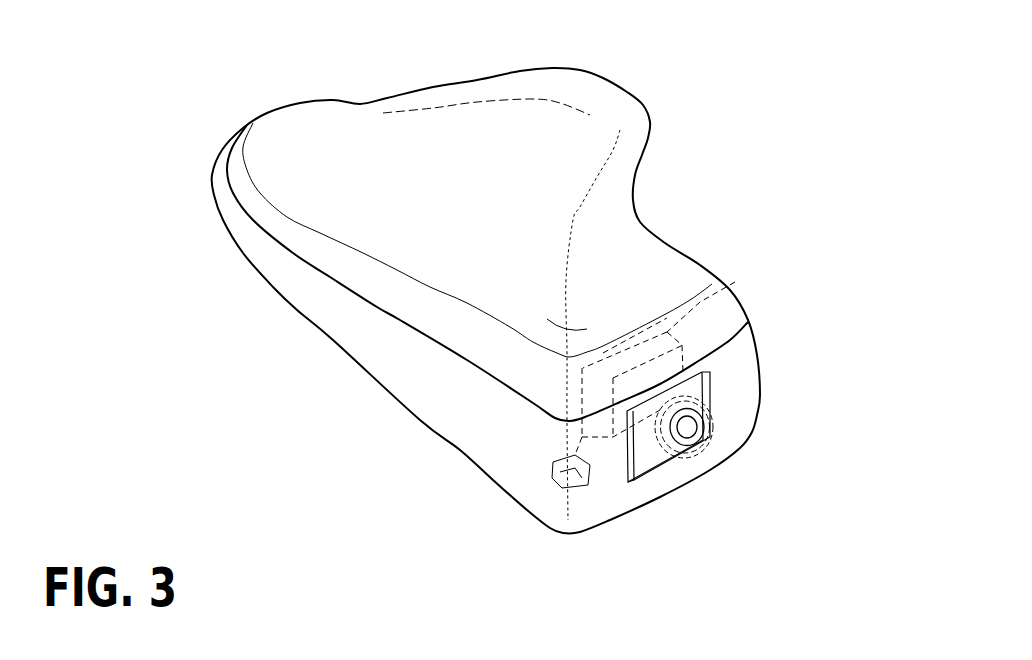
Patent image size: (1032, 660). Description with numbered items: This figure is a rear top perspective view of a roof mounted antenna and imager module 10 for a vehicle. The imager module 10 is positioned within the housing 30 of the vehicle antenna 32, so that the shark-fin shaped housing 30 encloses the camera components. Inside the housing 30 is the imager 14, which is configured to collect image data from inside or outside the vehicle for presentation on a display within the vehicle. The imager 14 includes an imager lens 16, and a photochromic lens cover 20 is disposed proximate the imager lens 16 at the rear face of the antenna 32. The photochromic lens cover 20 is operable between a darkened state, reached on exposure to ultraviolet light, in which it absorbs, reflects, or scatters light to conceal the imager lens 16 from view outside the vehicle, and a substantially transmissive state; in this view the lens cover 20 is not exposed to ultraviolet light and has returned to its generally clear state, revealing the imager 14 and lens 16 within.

The imager module 10 is at (852, 334).
The imager 14 is at (735, 282).
The imager lens 16 is at (688, 427).
The photochromic lens cover 20 is at (712, 398).
The housing 30 is at (298, 133).
The vehicle antenna 32 is at (485, 90).